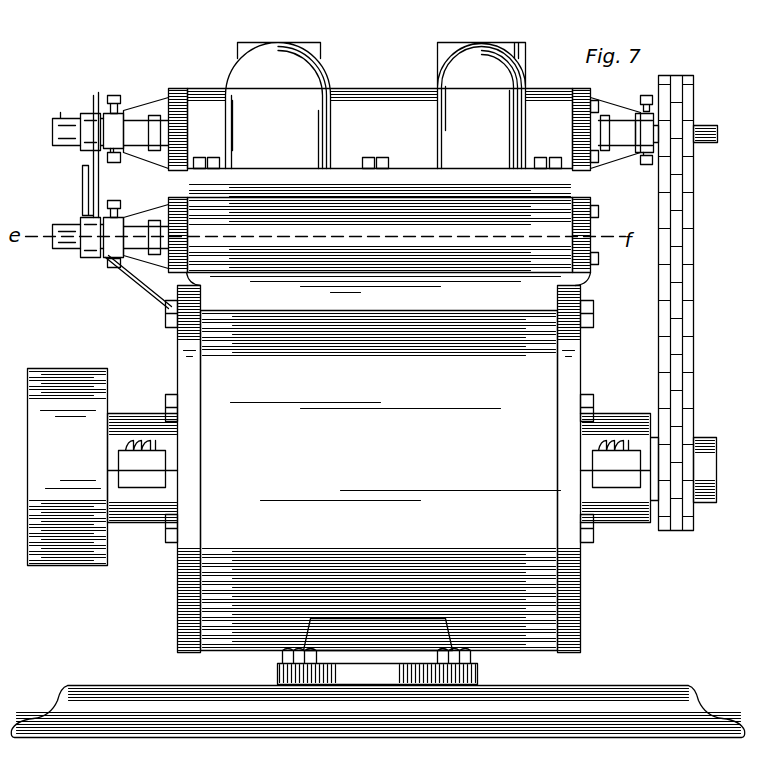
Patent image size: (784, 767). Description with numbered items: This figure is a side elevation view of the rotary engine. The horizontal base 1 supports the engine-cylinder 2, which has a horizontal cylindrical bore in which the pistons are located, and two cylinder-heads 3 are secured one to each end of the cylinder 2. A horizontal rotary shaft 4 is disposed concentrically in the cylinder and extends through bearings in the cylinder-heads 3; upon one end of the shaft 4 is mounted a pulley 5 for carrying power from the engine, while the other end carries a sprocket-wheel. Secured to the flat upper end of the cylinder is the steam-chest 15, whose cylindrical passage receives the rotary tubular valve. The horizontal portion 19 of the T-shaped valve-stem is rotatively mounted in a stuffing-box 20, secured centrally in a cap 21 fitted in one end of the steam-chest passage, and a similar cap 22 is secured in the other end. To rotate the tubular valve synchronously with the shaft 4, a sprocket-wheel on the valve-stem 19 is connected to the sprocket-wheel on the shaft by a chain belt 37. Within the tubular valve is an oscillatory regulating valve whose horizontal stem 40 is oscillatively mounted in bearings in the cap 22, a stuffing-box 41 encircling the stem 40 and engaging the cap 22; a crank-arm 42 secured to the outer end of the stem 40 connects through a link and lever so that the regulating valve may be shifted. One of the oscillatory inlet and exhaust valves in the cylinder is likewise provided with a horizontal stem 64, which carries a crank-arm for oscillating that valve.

The horizontal base 1 is at (270, 692).
The engine-cylinder 2 is at (381, 464).
The cylinder-heads 3 is at (200, 518).
The horizontal rotary shaft 4 is at (716, 483).
The pulley 5 is at (68, 467).
The steam-chest 15 is at (380, 158).
The valve-stem 19 is at (708, 125).
The stuffing-box 20 is at (630, 152).
The cap 21 is at (598, 84).
The cap 22 is at (167, 98).
The chain belt 37 is at (693, 200).
The horizontal stem 40 is at (62, 118).
The stuffing-box 41 is at (160, 150).
The crank-arm 42 is at (80, 160).
The horizontal stem 64 is at (70, 252).